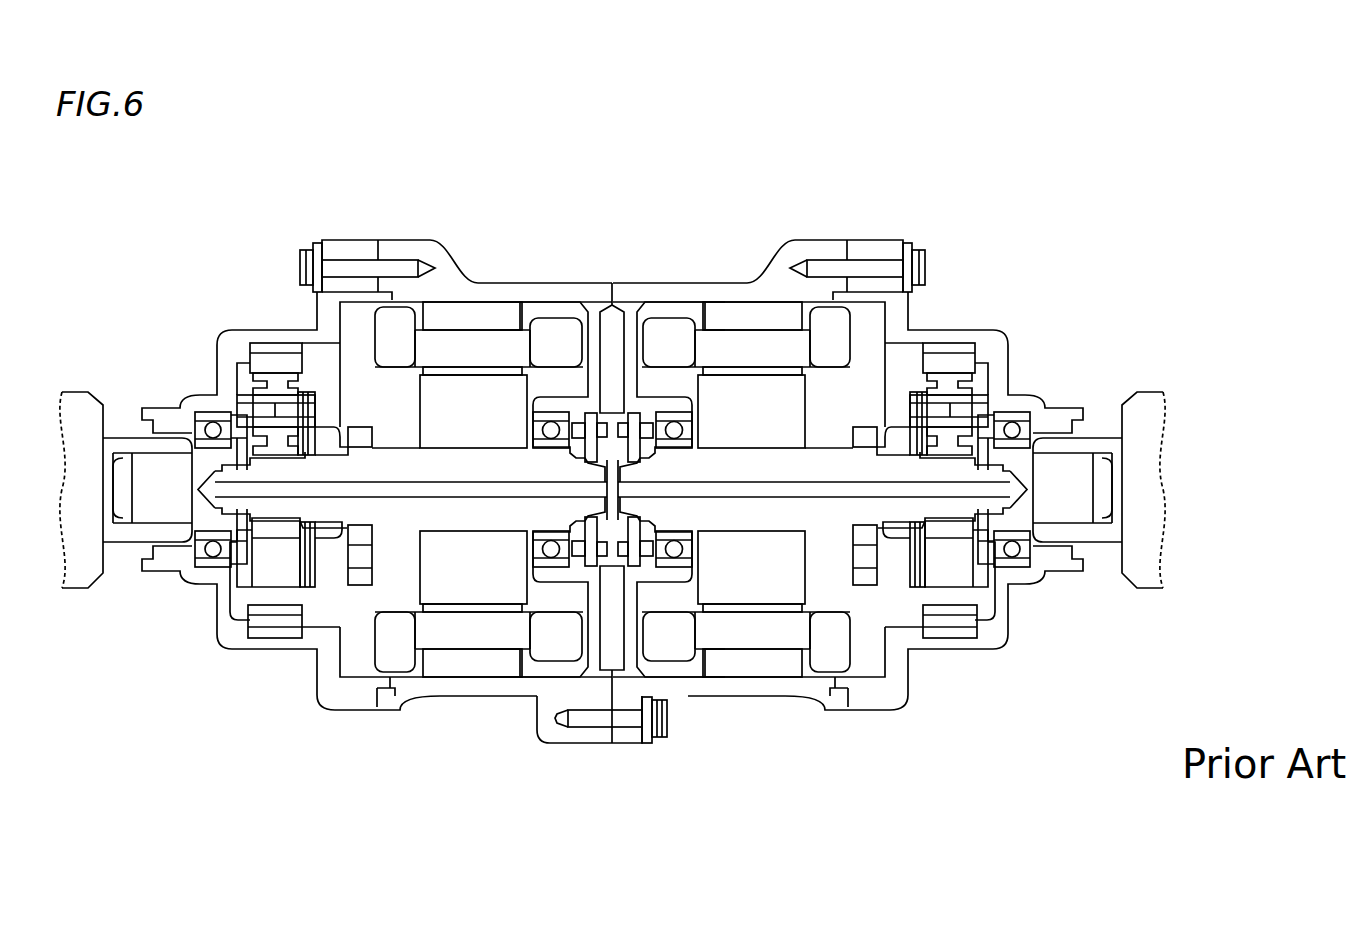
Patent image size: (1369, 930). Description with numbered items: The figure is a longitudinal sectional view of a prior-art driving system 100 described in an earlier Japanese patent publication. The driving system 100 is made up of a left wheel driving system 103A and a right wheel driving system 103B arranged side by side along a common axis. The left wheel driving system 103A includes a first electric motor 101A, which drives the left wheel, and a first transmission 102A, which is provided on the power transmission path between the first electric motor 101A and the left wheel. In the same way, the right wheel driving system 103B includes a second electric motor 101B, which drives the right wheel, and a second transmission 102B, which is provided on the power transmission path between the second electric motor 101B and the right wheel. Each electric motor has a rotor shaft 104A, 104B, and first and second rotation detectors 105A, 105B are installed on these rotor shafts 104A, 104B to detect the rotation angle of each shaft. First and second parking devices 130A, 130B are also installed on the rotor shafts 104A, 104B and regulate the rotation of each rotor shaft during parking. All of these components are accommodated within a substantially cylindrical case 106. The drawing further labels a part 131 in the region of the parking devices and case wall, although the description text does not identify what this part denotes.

The driving system 100 is at (972, 186).
The first electric motor 101A is at (441, 352).
The second electric motor 101B is at (784, 352).
The first transmission 102A is at (247, 385).
The second transmission 102B is at (978, 385).
The left wheel driving system 103A is at (342, 390).
The right wheel driving system 103B is at (882, 394).
The rotor shaft 104A is at (493, 517).
The rotor shaft 104B is at (890, 525).
The first rotation detector 105A is at (578, 570).
The second rotation detector 105B is at (645, 570).
The case 106 is at (620, 283).
The first parking device 130A is at (330, 606).
The second parking device 130B is at (895, 606).
The housing spacer 131 is at (859, 416).